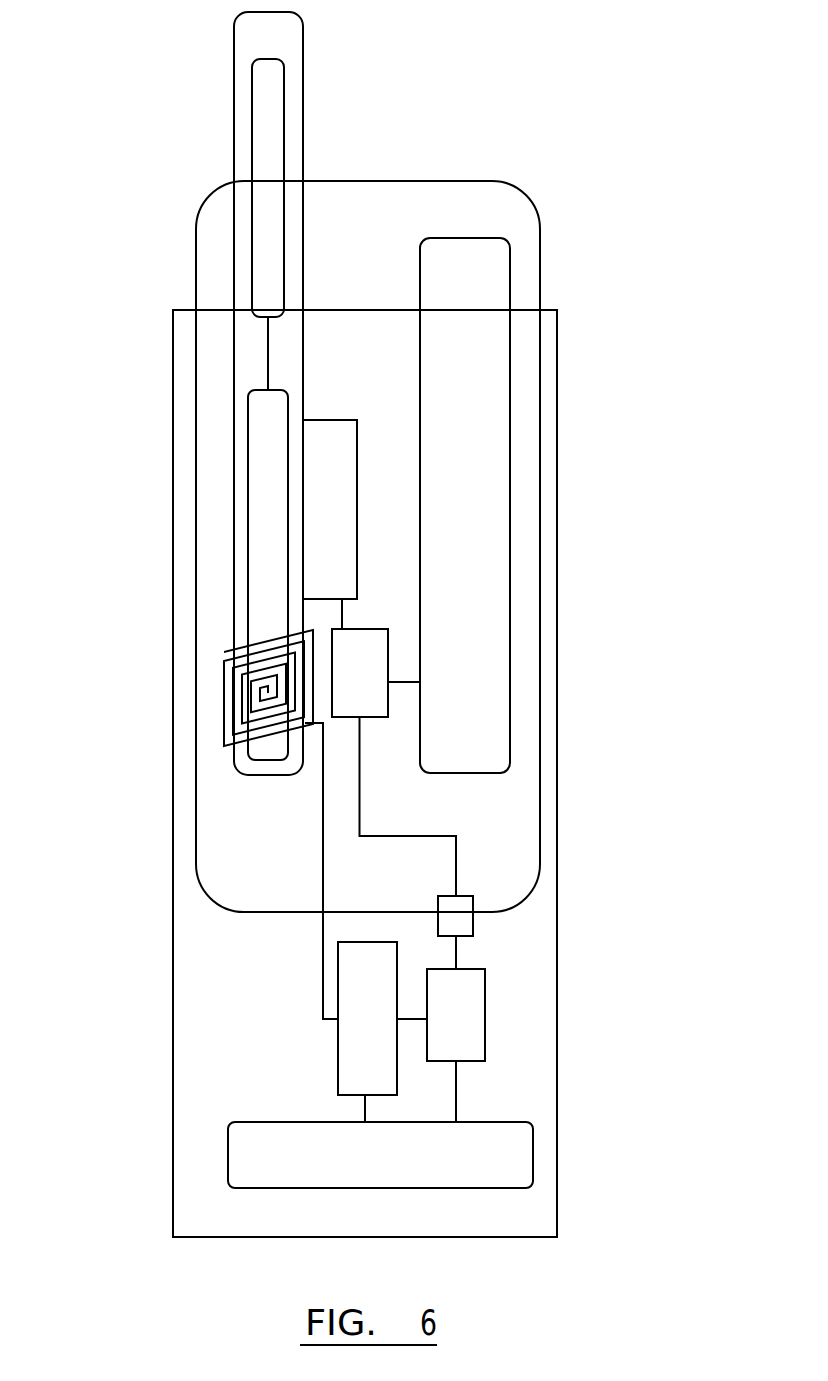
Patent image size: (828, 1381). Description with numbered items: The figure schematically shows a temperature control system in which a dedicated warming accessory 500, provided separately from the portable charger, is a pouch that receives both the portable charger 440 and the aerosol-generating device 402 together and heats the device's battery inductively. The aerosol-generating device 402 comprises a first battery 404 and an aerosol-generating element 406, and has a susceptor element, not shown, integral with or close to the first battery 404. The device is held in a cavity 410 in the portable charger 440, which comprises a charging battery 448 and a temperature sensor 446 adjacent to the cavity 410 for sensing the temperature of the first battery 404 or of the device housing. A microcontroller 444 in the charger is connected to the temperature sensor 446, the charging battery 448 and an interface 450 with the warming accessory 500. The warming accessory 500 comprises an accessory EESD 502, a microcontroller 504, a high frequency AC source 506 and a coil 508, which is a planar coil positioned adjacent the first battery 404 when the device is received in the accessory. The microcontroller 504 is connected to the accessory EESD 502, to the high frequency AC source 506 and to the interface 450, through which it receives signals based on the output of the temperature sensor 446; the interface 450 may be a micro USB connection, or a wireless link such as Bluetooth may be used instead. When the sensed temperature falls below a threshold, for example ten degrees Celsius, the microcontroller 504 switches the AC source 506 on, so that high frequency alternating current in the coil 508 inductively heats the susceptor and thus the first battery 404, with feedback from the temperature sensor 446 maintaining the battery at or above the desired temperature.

The aerosol-generating device 402 is at (307, 132).
The aerosol-generating element 406 is at (252, 122).
The first battery 404 is at (248, 517).
The cavity 410 is at (247, 415).
The portable charger 440 is at (434, 181).
The charging battery 448 is at (510, 391).
The temperature sensor 446 is at (357, 509).
The microcontroller 444 is at (388, 655).
The interface 450 is at (478, 888).
The warming accessory 500 is at (170, 309).
The microcontroller 504 is at (485, 1013).
The high frequency AC source 506 is at (338, 1062).
The accessory EESD 502 is at (536, 1152).
The coil 508 is at (224, 702).